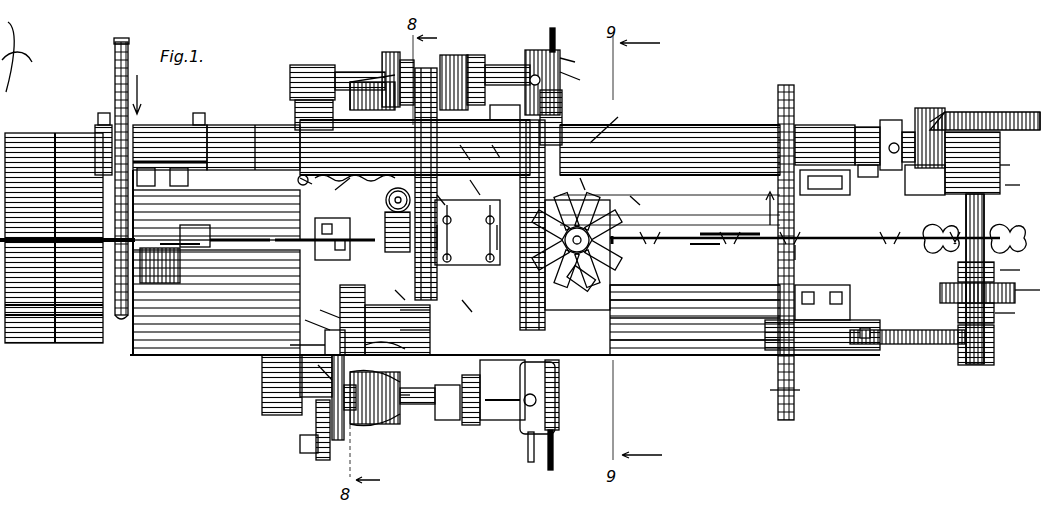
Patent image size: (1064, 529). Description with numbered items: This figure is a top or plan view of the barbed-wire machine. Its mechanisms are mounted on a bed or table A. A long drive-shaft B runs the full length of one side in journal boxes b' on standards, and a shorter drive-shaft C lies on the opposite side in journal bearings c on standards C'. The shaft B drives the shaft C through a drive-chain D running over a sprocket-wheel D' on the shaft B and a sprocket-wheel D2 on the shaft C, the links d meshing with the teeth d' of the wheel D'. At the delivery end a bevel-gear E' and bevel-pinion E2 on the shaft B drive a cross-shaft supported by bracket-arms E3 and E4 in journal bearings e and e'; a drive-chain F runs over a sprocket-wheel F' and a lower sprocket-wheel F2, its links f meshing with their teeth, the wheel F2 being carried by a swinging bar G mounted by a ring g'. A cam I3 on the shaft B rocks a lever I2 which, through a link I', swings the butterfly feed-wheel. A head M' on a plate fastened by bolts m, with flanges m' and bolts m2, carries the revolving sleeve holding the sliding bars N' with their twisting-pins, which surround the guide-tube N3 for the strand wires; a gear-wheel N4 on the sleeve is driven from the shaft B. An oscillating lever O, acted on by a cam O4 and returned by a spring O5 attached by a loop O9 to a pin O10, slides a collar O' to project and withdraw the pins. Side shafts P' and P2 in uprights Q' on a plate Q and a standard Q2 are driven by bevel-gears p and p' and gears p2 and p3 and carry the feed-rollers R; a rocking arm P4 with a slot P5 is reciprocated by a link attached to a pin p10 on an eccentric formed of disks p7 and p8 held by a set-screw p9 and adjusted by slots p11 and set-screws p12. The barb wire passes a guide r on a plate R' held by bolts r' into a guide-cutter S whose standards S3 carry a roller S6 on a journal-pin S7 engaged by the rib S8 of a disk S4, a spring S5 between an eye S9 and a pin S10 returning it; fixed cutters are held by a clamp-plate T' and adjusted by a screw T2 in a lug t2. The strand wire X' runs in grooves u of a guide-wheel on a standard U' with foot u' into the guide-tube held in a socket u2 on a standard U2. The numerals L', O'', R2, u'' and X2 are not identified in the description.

The bed or table A is at (690, 244).
The drive-shaft B is at (722, 132).
The journal boxes or bearings b' is at (238, 127).
The drive-shaft C is at (415, 300).
The standards or uprights C' is at (823, 295).
The journal bearings or boxes c is at (415, 328).
The drive-chain D is at (759, 203).
The sprocket-wheel D' is at (825, 127).
The sprocket-wheel D2 is at (793, 378).
The links d is at (806, 258).
The teeth d' is at (786, 241).
The bevel-gear E' is at (985, 110).
The bevel-pinion E2 is at (918, 130).
The bracket-arm E3 is at (972, 163).
The bracket-arm E4 is at (907, 350).
The journal bearing or box e is at (1007, 166).
The journal bearing or box e' is at (988, 345).
The drive-chain F is at (967, 257).
The sprocket or chain wheel F' is at (958, 294).
The sprocket or chain wheel F2 is at (1016, 314).
The links f is at (1035, 282).
The swinging or oscillating bar G is at (1019, 264).
The band or ring g' is at (972, 296).
The link or arm I' is at (1016, 184).
The lever or bar I2 is at (825, 190).
The cam I3 is at (904, 120).
The bracket L' is at (925, 186).
The block or head M' is at (467, 232).
The bolts m is at (445, 193).
The flange m' is at (490, 237).
The bolts m2 is at (447, 237).
The sliding bars N' is at (429, 172).
The guide-tube N3 is at (340, 300).
The gear-wheel N4 is at (400, 310).
The vibrating or oscillating lever O is at (375, 221).
The sliding collar or head O' is at (392, 238).
The worm O'' is at (289, 174).
The cam O4 is at (337, 190).
The spring O5 is at (346, 188).
The loop O9 is at (405, 150).
The pin or bolt O10 is at (283, 188).
The shaft P' is at (365, 78).
The shaft P2 is at (496, 70).
The rocking arm P4 is at (318, 445).
The slot P5 is at (333, 400).
The bevel-gear p is at (378, 62).
The companion gear p' is at (401, 72).
The gear p2 is at (508, 404).
The gear p3 is at (474, 56).
The disk or plate p7 is at (345, 335).
The plate or disk p8 is at (405, 282).
The set-screw p9 is at (395, 352).
The pin or pivot p10 is at (297, 342).
The slots p11 is at (333, 302).
The set-screws p12 is at (313, 316).
The plate Q is at (500, 106).
The uprights or standards Q' is at (456, 67).
The standard or upright Q2 is at (318, 66).
The feed-rollers R is at (553, 82).
The plate R' is at (552, 415).
The rack R2 is at (562, 110).
The guide r is at (572, 56).
The bolts r' is at (558, 32).
The guide-cutter S is at (583, 174).
The standard or upright S3 is at (457, 300).
The disk S4 is at (540, 180).
The spring S5 is at (466, 178).
The roller S6 is at (494, 141).
The journal-pin S7 is at (466, 142).
The projection or rib S8 is at (632, 193).
The eye S9 is at (613, 122).
The screw or pin S10 is at (583, 68).
The clamp-plate T' is at (584, 251).
The adjusting-screw T2 is at (620, 255).
The lug or ear t2 is at (620, 305).
The standard or upright U' is at (182, 265).
The standard or upright U2 is at (305, 244).
The grooves u is at (195, 228).
The flange or foot u' is at (240, 224).
The clutch fork u'' is at (180, 274).
The head or socket u2 is at (315, 236).
The wire X' is at (701, 255).
The collar X2 is at (726, 224).